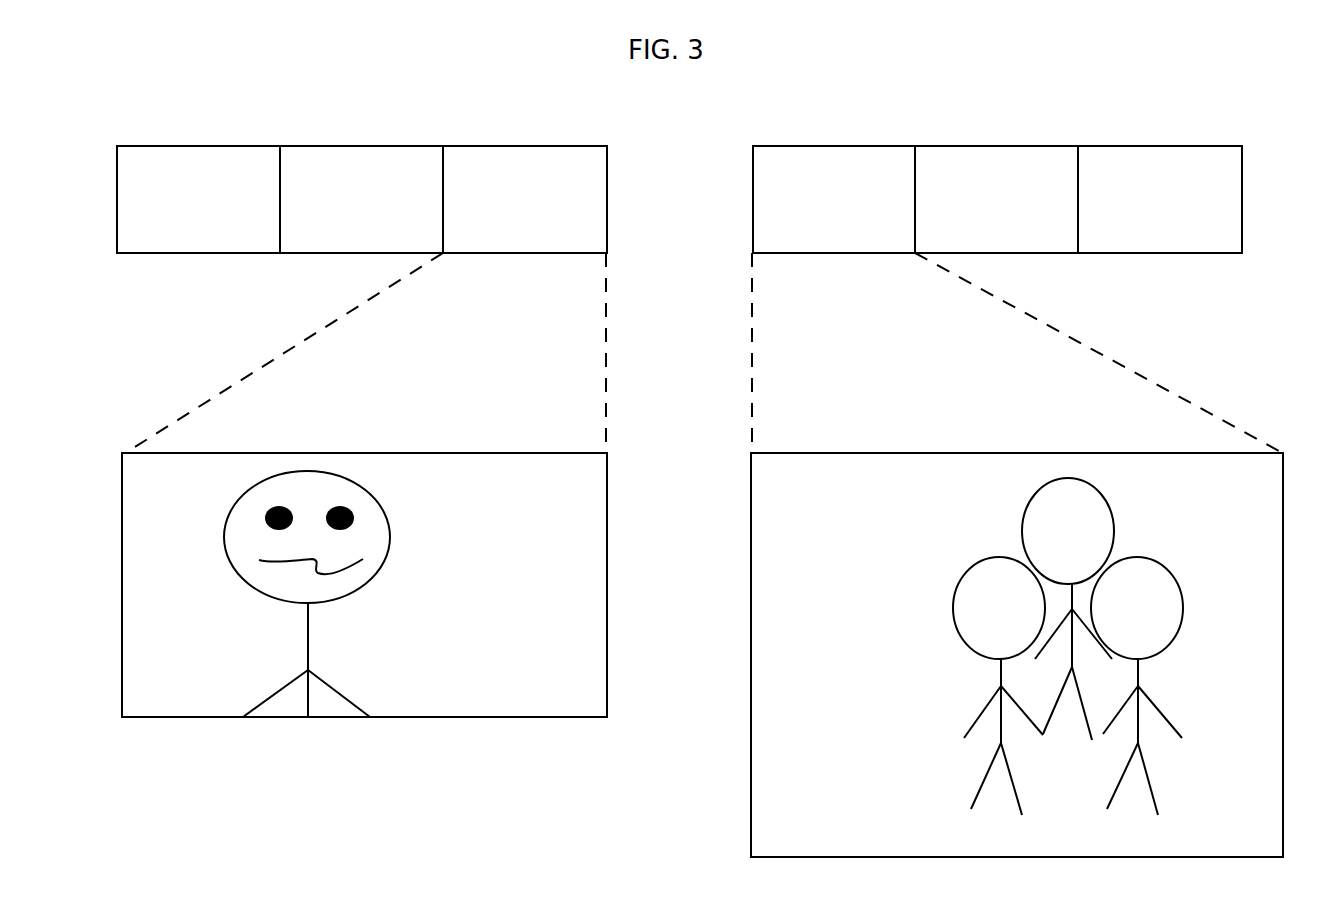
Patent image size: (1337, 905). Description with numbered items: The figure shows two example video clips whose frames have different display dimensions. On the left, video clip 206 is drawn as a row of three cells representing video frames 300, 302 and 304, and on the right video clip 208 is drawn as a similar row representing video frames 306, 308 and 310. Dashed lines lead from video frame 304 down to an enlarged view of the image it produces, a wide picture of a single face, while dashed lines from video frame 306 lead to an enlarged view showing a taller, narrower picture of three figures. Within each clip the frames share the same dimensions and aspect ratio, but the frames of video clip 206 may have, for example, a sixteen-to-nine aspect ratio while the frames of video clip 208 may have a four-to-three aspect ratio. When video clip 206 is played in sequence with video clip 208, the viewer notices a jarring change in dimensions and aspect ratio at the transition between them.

The video clip 206 is at (351, 112).
The video clip 208 is at (1013, 112).
The video frame 300 is at (198, 199).
The video frame 302 is at (361, 199).
The video frame 304 is at (135, 773).
The video frame 306 is at (660, 809).
The video frame 308 is at (996, 199).
The video frame 310 is at (1160, 199).